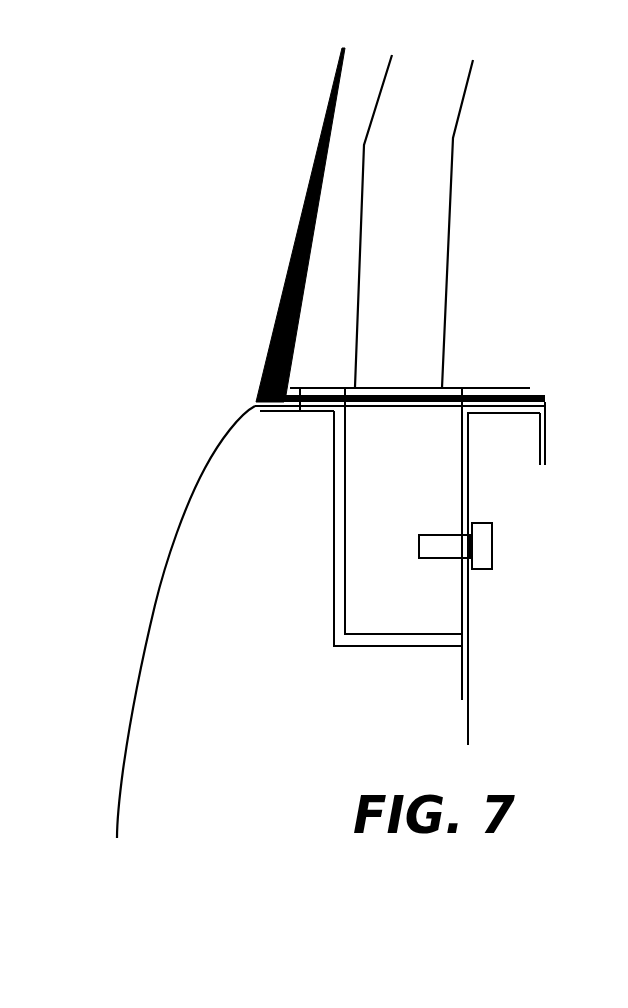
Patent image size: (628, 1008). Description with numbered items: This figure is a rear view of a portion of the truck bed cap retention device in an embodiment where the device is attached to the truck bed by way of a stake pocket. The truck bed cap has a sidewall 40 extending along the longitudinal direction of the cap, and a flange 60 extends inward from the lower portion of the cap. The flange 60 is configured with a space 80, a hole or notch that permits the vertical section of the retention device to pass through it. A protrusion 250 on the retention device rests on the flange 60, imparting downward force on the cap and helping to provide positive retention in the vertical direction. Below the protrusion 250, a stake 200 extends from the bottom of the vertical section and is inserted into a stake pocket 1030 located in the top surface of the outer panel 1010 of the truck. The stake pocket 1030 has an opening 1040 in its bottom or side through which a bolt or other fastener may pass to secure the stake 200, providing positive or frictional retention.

The sidewall 40 is at (307, 193).
The space 80 is at (398, 388).
The protrusion 250 is at (487, 388).
The flange 60 is at (543, 392).
The stake 200 is at (438, 483).
The outer panel 1010 is at (297, 388).
The stake pocket 1030 is at (363, 525).
The opening 1040 is at (483, 570).